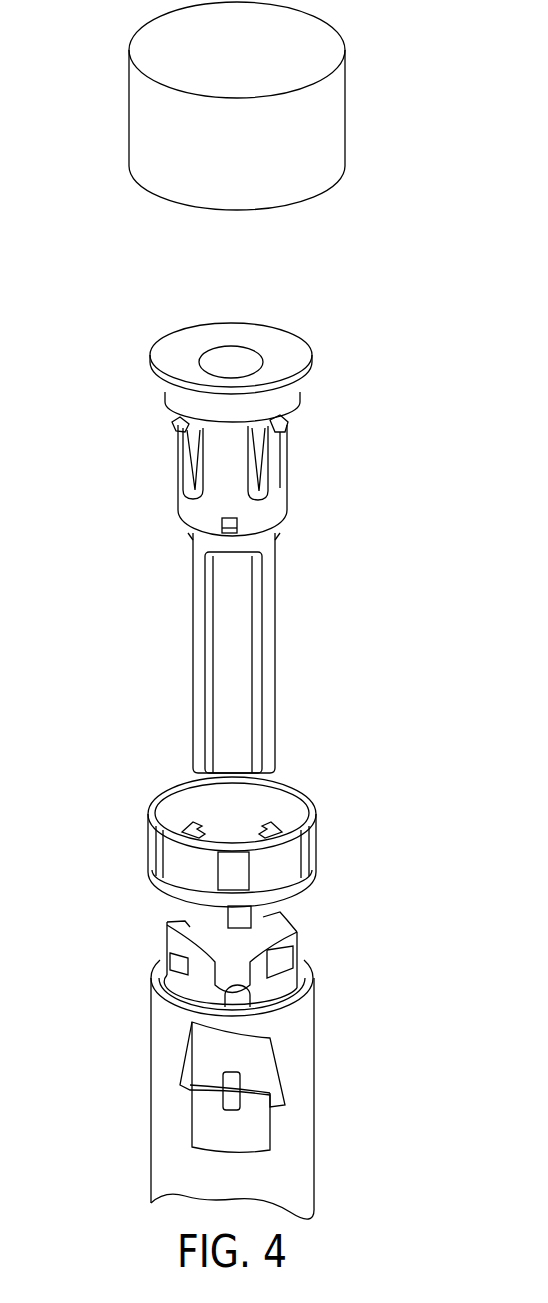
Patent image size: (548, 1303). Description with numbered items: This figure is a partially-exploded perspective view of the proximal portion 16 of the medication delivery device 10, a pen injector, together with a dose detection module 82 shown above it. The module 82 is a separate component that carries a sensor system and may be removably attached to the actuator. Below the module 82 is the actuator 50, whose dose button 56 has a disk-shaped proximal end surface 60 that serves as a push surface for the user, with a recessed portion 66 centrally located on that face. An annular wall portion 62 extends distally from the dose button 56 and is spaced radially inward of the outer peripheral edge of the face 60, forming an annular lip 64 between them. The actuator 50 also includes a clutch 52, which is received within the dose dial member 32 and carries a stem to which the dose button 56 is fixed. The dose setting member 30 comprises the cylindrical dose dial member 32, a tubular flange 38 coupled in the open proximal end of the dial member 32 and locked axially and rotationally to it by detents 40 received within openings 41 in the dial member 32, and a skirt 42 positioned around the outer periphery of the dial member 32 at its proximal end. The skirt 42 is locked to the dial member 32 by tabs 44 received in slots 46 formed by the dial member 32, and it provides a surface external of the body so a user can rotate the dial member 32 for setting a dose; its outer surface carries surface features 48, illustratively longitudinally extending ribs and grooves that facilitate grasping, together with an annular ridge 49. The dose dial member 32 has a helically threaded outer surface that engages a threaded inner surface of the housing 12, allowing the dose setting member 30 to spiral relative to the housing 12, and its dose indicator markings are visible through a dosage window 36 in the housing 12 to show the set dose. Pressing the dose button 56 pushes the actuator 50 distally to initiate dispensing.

The module 82 is at (96, 91).
The medication delivery device 10 is at (99, 307).
The actuator 50 is at (96, 343).
The dose button 56 is at (277, 324).
The proximal end surface 60 is at (163, 357).
The recessed portion 66 is at (230, 360).
The annular lip 64 is at (310, 354).
The annular wall portion 62 is at (173, 400).
The tubular flange 38 is at (198, 512).
The detents 40 is at (287, 433).
The clutch 52 is at (299, 598).
The proximal portion 16 is at (134, 595).
The dose setting member 30 is at (360, 713).
The skirt 42 is at (331, 829).
The tabs 44 is at (180, 828).
The surface features 48 is at (160, 855).
The annular ridge 49 is at (160, 883).
The dose dial member 32 is at (297, 977).
The openings 41 is at (172, 960).
The slots 46 is at (185, 983).
The housing 12 is at (336, 1170).
The dosage window 36 is at (202, 1054).